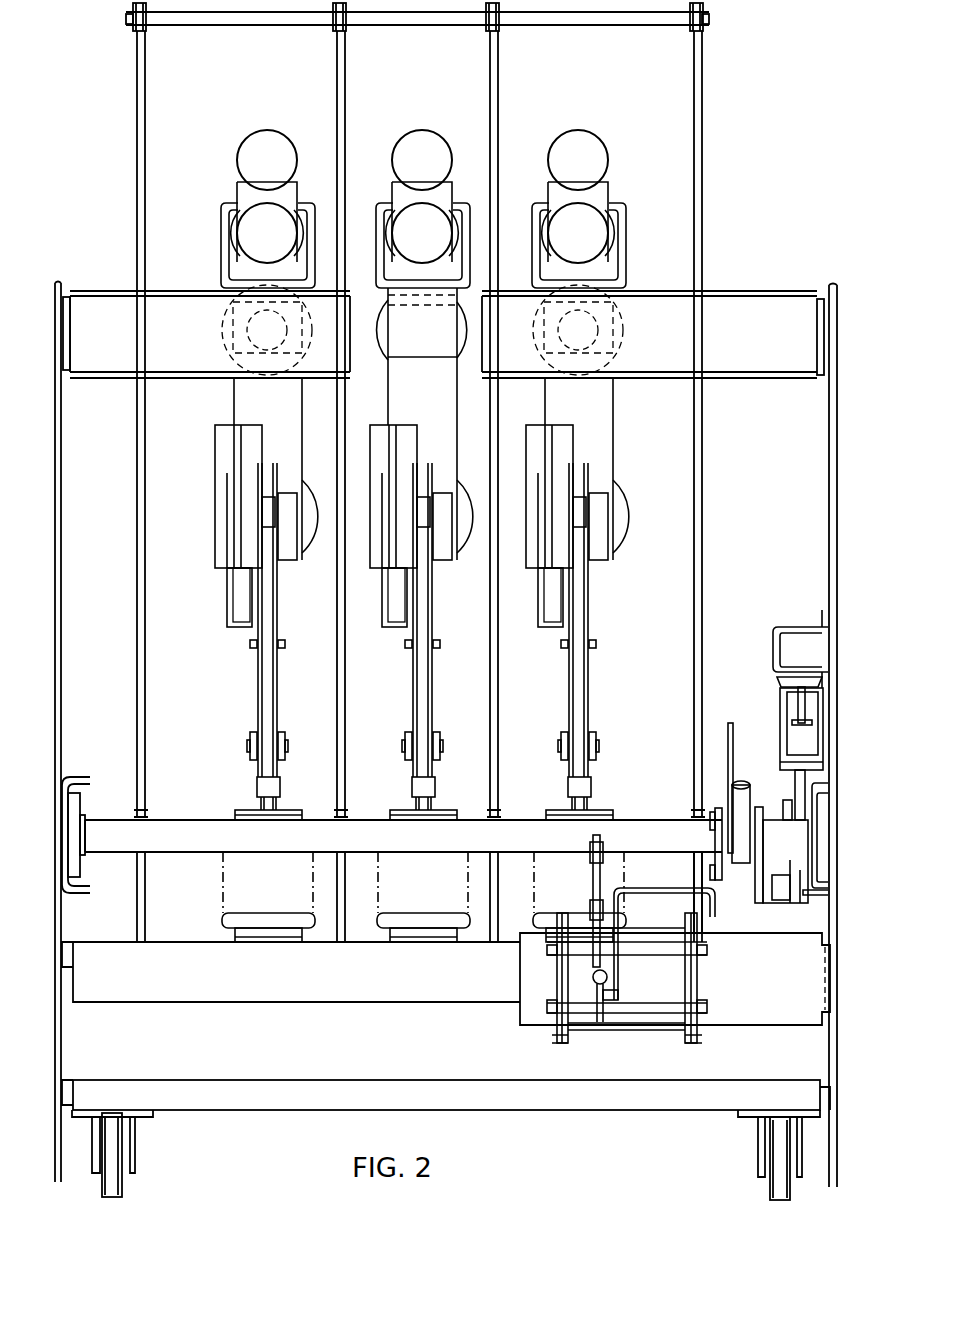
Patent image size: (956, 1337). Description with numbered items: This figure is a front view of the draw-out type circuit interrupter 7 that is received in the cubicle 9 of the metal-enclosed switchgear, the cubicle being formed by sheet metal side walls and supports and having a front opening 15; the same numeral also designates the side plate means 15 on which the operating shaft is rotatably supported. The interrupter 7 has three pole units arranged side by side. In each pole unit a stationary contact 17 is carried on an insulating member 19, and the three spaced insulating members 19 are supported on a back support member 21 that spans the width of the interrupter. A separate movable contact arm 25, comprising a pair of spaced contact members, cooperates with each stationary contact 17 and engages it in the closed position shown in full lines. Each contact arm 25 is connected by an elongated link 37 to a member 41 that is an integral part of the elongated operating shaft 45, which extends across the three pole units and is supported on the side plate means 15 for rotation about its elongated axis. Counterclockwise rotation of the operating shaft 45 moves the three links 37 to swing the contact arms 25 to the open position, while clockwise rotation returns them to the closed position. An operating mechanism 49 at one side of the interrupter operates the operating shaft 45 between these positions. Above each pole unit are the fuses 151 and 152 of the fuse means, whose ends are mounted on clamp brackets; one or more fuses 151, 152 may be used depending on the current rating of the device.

The circuit interrupter 7 is at (104, 228).
The cubicle 9 is at (57, 283).
The front opening 15 is at (57, 618).
The stationary contact 17 is at (270, 510).
The insulating member 19 is at (223, 326).
The back support member 21 is at (122, 291).
The movable contact arm 25 is at (280, 594).
The elongated link 37 is at (270, 679).
The member 41 is at (274, 808).
The operating shaft 45 is at (555, 853).
The operating mechanism 49 is at (797, 738).
The fuse 151 is at (288, 146).
The fuse 152 is at (286, 228).